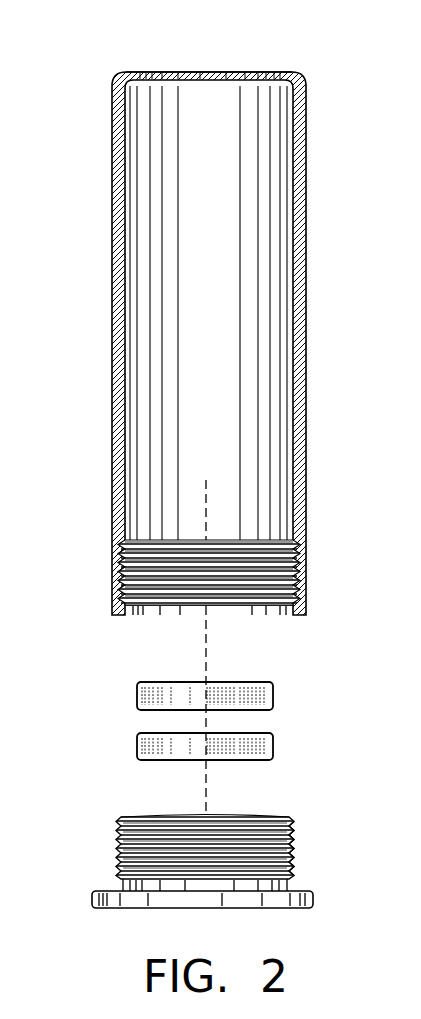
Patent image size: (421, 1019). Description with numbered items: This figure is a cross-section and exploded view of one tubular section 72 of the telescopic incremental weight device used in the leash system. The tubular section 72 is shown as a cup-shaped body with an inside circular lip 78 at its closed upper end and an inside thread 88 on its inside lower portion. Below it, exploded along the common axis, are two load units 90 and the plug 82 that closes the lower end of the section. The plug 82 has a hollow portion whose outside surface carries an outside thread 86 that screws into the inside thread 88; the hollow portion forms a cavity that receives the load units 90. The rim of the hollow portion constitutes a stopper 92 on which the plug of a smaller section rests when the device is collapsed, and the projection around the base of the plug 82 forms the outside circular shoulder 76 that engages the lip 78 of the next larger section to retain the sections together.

The tubular section 72 is at (112, 212).
The inside circular lip 78 is at (133, 72).
The inside thread 88 is at (283, 606).
The load units 90 is at (273, 697).
The plug 82 is at (229, 821).
The stopper 92 is at (138, 816).
The outside thread 86 is at (293, 845).
The outside circular shoulder 76 is at (104, 891).